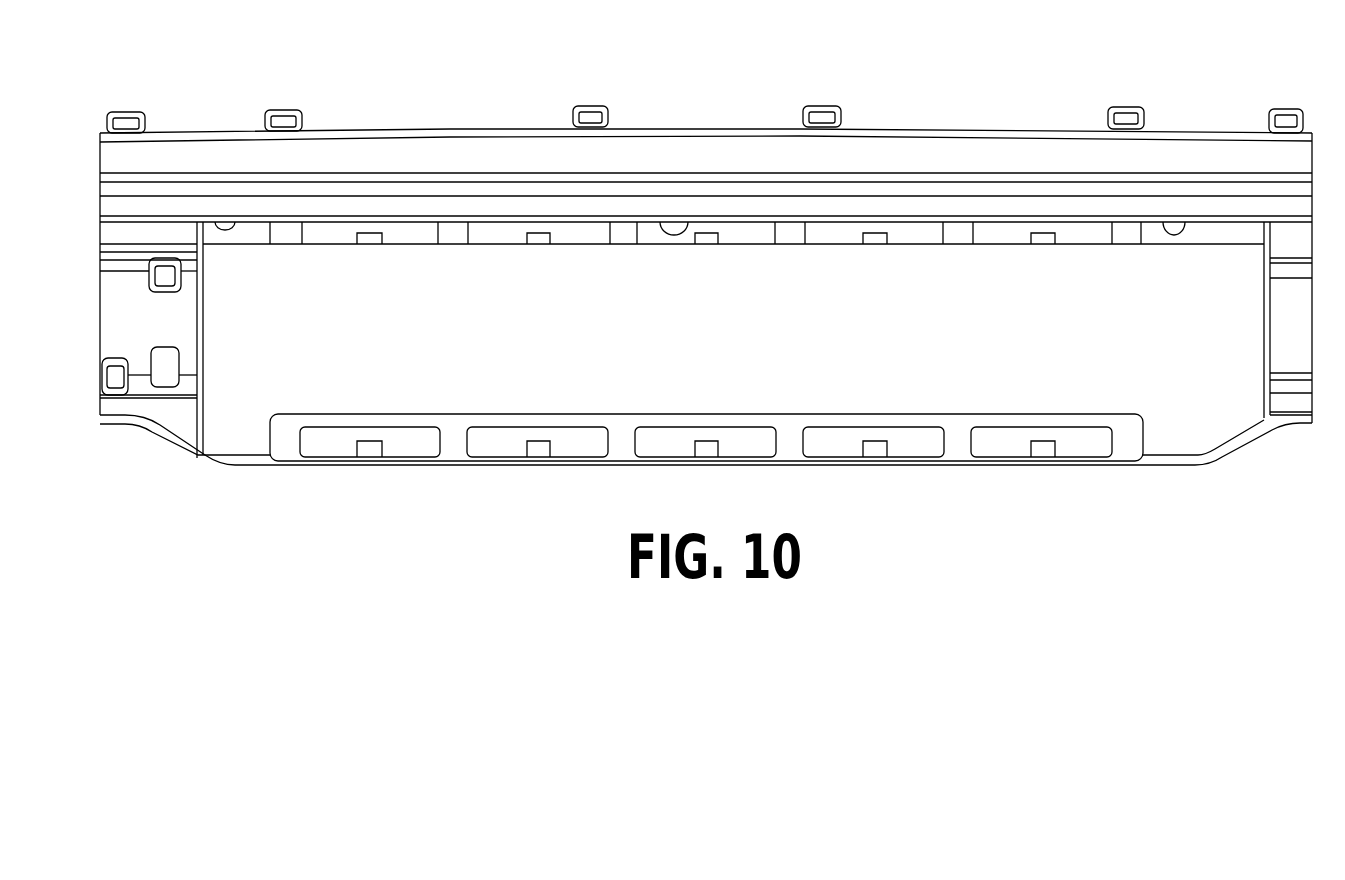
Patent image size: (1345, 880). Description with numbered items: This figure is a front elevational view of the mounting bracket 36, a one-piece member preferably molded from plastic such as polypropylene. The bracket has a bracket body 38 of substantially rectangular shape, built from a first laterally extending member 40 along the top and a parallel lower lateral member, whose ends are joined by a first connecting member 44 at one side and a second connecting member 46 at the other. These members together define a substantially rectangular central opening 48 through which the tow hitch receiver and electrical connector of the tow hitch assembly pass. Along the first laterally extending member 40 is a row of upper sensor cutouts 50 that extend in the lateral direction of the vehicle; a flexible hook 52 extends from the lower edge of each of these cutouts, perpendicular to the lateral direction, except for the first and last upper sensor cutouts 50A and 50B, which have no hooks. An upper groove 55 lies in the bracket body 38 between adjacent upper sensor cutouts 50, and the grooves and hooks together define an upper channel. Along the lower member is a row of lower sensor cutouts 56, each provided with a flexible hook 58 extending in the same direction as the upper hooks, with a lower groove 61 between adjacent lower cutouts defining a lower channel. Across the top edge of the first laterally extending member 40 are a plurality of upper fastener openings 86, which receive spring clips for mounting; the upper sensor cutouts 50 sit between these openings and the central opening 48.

The mounting bracket 36 is at (328, 463).
The bracket body 38 is at (462, 130).
The first laterally extending member 40 is at (878, 153).
The first connecting member 44 is at (1292, 337).
The second connecting member 46 is at (148, 331).
The central opening 48 is at (747, 245).
The upper sensor cutouts 50 is at (663, 234).
The first upper sensor cutout 50A is at (1176, 234).
The last upper sensor cutout 50B is at (222, 227).
The flexible hook 52 is at (550, 236).
The upper groove 55 is at (290, 235).
The lower sensor cutouts 56 is at (899, 428).
The flexible hook 58 is at (1055, 445).
The lower groove 61 is at (453, 440).
The upper fastener openings 86 is at (588, 106).